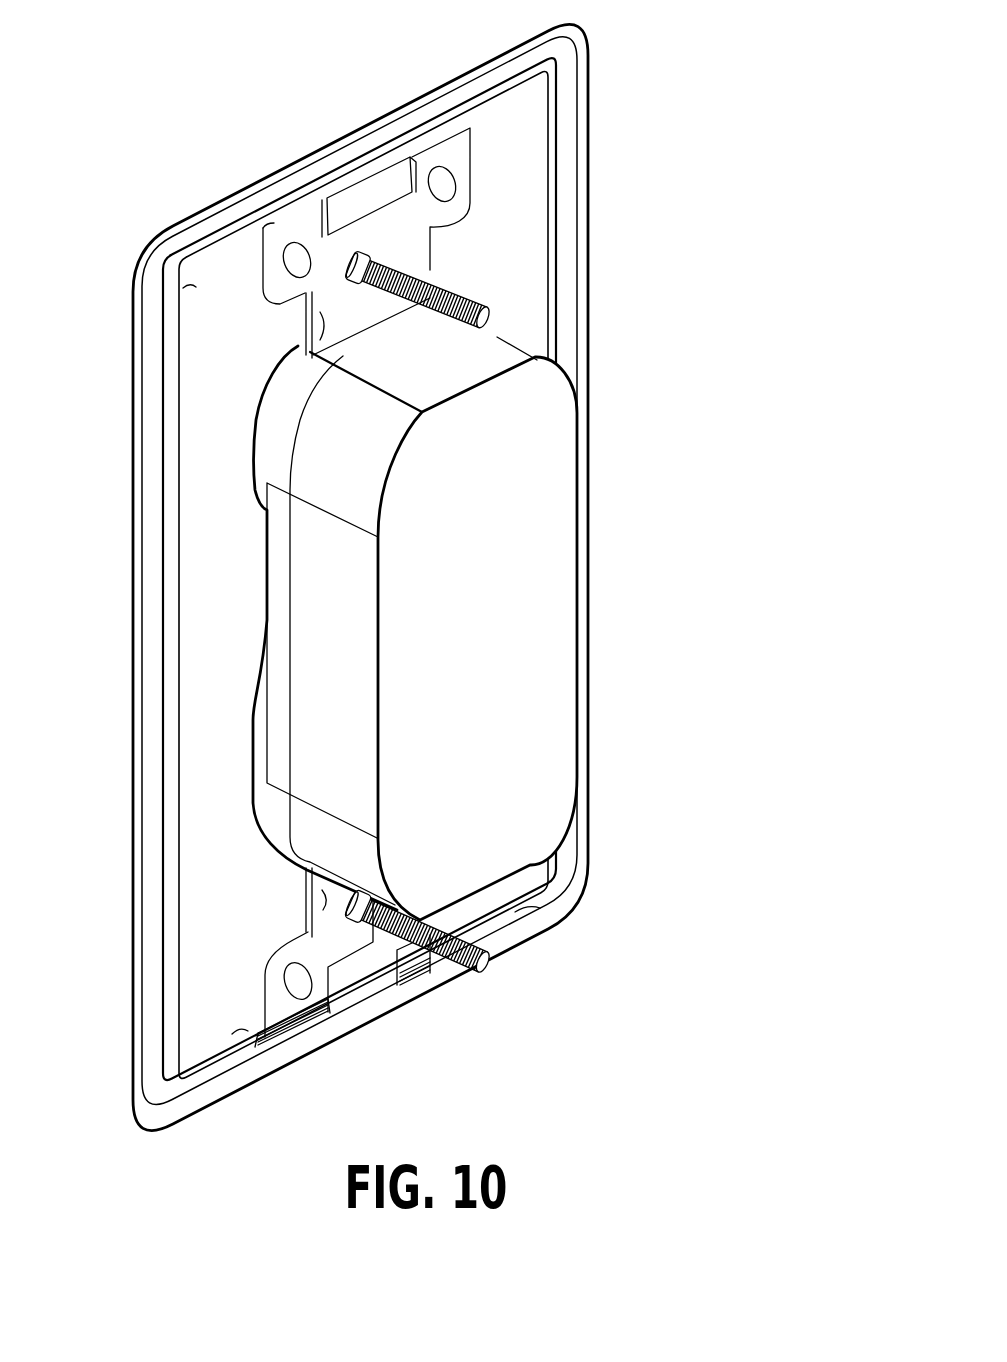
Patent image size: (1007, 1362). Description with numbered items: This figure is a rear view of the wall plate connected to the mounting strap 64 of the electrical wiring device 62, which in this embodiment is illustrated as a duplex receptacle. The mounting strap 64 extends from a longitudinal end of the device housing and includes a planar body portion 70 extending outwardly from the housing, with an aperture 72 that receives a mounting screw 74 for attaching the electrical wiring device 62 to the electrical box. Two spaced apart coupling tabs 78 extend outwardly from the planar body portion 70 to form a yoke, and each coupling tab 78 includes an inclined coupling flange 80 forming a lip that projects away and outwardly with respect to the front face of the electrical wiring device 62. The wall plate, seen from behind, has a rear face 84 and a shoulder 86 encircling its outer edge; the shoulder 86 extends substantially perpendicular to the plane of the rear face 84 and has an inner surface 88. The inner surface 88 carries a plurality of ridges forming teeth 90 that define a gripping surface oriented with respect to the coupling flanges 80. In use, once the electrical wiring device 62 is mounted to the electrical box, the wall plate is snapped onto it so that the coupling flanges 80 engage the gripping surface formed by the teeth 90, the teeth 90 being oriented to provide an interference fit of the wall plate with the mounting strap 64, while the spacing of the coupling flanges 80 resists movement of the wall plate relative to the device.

The electrical wiring device 62 is at (590, 592).
The mounting strap 64 is at (392, 256).
The planar body portion 70 is at (303, 352).
The aperture 72 is at (378, 937).
The mounting screw 74 is at (484, 303).
The coupling tabs 78 is at (462, 163).
The coupling flange 80 is at (470, 115).
The rear face 84 is at (228, 612).
The shoulder 86 is at (186, 292).
The inner surface 88 is at (517, 917).
The teeth 90 is at (418, 985).